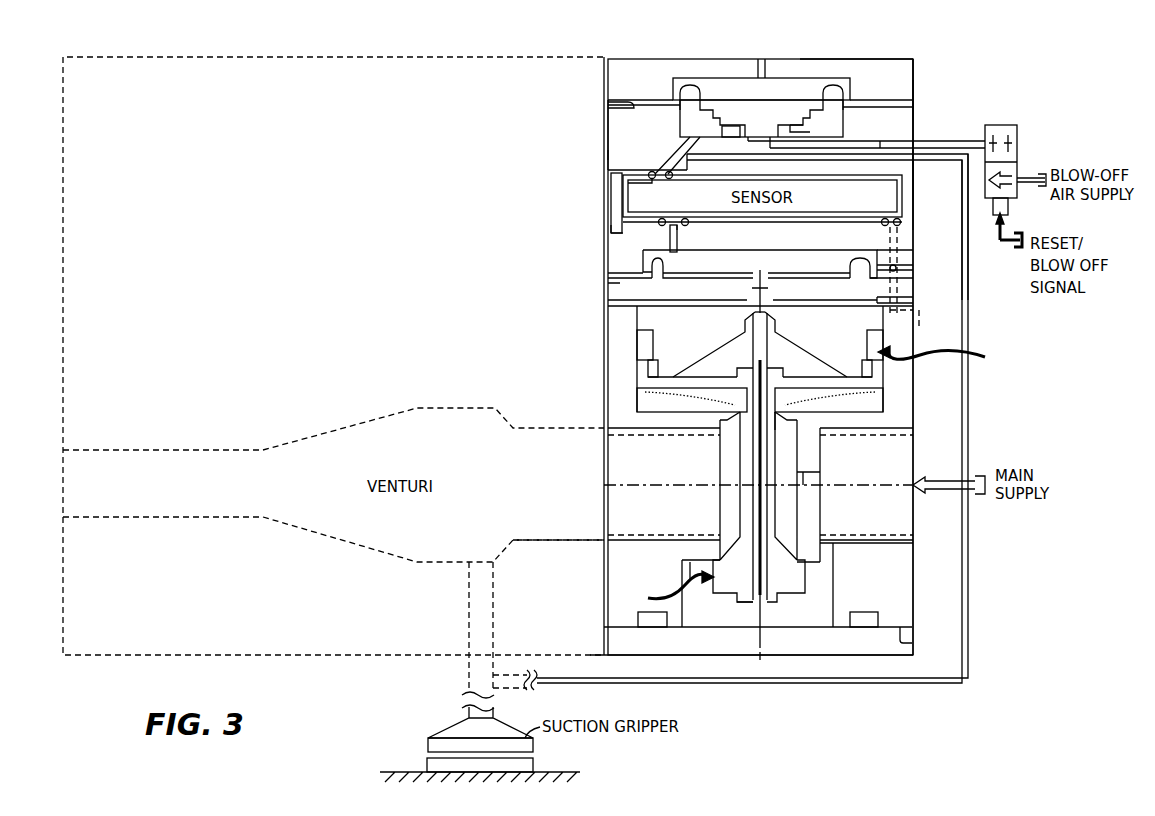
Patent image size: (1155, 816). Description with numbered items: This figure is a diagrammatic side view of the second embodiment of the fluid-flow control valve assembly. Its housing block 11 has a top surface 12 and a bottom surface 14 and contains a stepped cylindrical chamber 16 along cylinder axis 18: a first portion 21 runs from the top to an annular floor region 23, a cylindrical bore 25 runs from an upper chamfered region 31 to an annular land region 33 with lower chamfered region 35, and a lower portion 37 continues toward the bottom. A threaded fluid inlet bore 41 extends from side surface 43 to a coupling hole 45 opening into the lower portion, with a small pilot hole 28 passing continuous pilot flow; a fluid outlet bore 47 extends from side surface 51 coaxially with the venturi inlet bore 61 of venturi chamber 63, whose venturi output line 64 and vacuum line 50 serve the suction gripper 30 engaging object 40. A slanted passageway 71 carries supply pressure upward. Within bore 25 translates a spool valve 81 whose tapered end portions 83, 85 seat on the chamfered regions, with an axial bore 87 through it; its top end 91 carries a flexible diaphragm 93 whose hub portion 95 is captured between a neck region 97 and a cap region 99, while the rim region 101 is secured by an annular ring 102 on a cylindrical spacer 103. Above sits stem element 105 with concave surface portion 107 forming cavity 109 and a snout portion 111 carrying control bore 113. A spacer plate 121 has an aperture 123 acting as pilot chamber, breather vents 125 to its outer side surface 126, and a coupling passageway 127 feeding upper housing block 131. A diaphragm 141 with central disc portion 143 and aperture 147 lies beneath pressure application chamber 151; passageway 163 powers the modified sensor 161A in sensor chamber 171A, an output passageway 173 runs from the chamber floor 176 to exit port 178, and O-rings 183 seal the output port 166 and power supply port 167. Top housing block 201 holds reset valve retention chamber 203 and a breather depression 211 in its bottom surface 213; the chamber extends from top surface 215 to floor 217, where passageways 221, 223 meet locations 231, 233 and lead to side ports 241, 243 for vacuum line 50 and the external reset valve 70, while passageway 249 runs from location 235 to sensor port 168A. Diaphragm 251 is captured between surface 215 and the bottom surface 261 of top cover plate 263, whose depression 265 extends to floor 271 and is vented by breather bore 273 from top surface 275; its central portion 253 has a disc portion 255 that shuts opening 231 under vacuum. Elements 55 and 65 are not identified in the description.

The housing block 11 is at (905, 395).
The top surface 12 is at (608, 300).
The bottom surface 14 is at (912, 640).
The stepped cylindrical chamber 16 is at (944, 352).
The longitudinal cylinder axis 18 is at (765, 643).
The first portion of chamber 21 is at (640, 322).
The annular floor region 23 is at (665, 408).
The cylindrical bore 25 is at (718, 510).
The pilot hole 28 is at (812, 477).
The suction gripper device 30 is at (440, 732).
The chamfered region 31 is at (712, 435).
The annular land region 33 is at (683, 565).
The chamfered region 35 is at (733, 581).
The lower portion of chamber 37 is at (835, 585).
The object 40 is at (533, 765).
The fluid inlet bore 41 is at (866, 485).
The side surface 43 is at (913, 580).
The coupling hole 45 is at (830, 557).
The fluid outlet bore 47 is at (664, 485).
The vacuum output line 50 is at (817, 680).
The side surface 51 is at (608, 398).
The bottom plate 55 is at (875, 645).
The venturi inlet bore 61 is at (333, 356).
The venturi chamber 63 is at (333, 485).
The venturi output line 64 is at (469, 675).
The venturi outlet 65 is at (604, 542).
The reset valve 70 is at (1005, 125).
The slanted L-shaped fluid passageway 71 is at (919, 328).
The spool valve 81 is at (669, 588).
The tapered end portion 83 is at (800, 425).
The tapered end portion 85 is at (795, 595).
The axial bore 87 is at (752, 605).
The top end of spool valve 91 is at (788, 375).
The flexible diaphragm 93 is at (860, 348).
The interior hub portion 95 is at (730, 385).
The neck region 97 is at (775, 388).
The cap region 99 is at (768, 372).
The rim region 101 is at (875, 368).
The annular ring 102 is at (648, 368).
The cylindrical spacer 103 is at (883, 400).
The stem element 105 is at (760, 357).
The concave V surface portion 107 is at (735, 335).
The interior cavity 109 is at (798, 360).
The snout portion 111 is at (752, 308).
The hollow cylindrical bore 113 is at (765, 312).
The spacer plate 121 is at (913, 285).
The cylindrical aperture 123 is at (760, 293).
The breather vents 125 is at (913, 305).
The outer side surface 126 is at (608, 283).
The coupling fluid communication passageway 127 is at (877, 297).
The upper housing block 131 is at (913, 228).
The flexible diaphragm 141 is at (818, 275).
The central disc portion 143 is at (778, 290).
The aperture 147 is at (896, 268).
The shallow cylindrical depression 151 is at (760, 264).
The modified sensor 161A is at (762, 198).
The fluid communication passageway 163 is at (880, 242).
The output port 166 is at (674, 222).
The power supply port 167 is at (893, 219).
The sensor control port 168A is at (668, 178).
The modified sensor chamber 171A is at (611, 200).
The L-shaped output fluid passageway 173 is at (670, 240).
The floor of sensor chamber 176 is at (611, 231).
The exit port 178 is at (650, 263).
The O-rings 183 is at (685, 224).
The top housing block 201 is at (608, 155).
The reset valve retention chamber 203 is at (735, 127).
The breather depression 211 is at (913, 180).
The bottom surface 213 is at (611, 176).
The top surface 215 is at (608, 120).
The circular floor 217 is at (800, 128).
The L-shaped fluid communication passageway 221 is at (810, 127).
The L-shaped fluid communication passageway 223 is at (880, 141).
The opening 231 is at (770, 125).
The port 233 is at (840, 130).
The location 235 is at (690, 127).
The side port 241 is at (962, 156).
The side port 243 is at (930, 141).
The sensor stimulus fluid communication passageway 249 is at (665, 150).
The flexible diaphragm 251 is at (913, 100).
The central circular portion 253 is at (712, 78).
The central disc portion 255 is at (742, 120).
The bottom surface 261 is at (608, 111).
The top cover plate 263 is at (915, 62).
The shallow cylindrical depression 265 is at (850, 85).
The circular floor 271 is at (673, 82).
The breather bore 273 is at (765, 59).
The top surface 275 is at (858, 60).